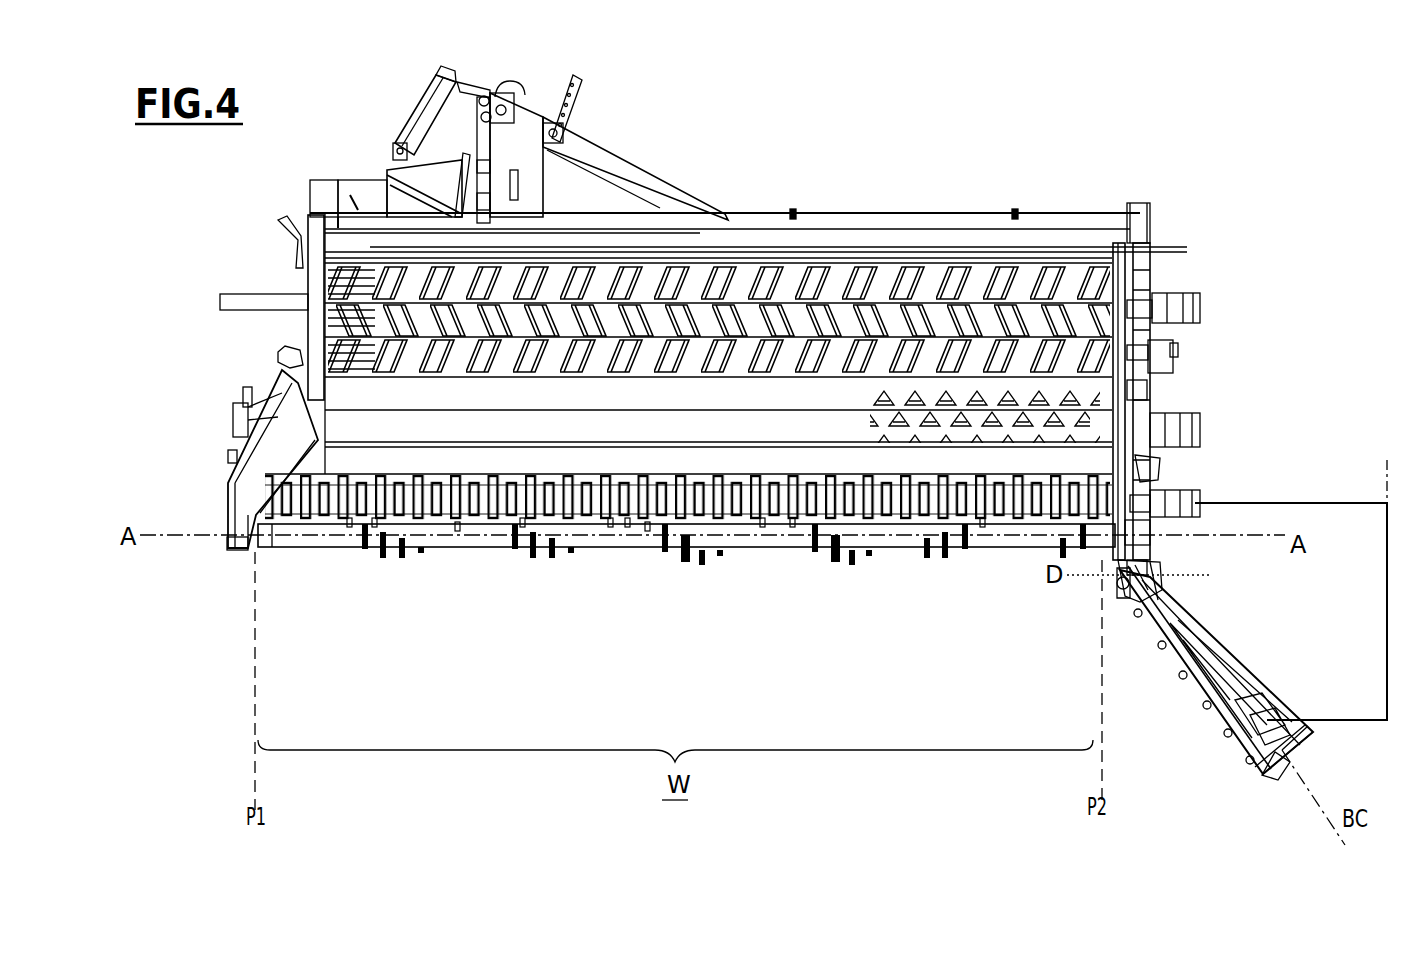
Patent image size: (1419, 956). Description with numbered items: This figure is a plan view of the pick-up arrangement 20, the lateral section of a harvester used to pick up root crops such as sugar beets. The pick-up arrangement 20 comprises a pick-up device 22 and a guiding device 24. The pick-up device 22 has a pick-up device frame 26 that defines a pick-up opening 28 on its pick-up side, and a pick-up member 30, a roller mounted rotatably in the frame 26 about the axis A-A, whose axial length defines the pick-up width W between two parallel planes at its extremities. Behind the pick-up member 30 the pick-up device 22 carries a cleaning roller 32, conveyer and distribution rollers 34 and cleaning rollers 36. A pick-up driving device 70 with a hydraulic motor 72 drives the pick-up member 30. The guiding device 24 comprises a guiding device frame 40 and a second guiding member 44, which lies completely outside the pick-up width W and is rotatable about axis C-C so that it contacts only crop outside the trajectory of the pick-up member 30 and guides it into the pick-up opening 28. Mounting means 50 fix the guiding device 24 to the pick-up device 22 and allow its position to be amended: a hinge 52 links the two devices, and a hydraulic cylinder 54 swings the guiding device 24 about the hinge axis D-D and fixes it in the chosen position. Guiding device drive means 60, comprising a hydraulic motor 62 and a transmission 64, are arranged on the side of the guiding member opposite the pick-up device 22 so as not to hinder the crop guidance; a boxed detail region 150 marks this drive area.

The pick-up arrangement 20 is at (1020, 106).
The pick-up device 22 is at (752, 193).
The guiding device 24 is at (1172, 688).
The pick-up device frame 26 is at (253, 449).
The pick-up opening 28 is at (770, 573).
The pick-up member 30 is at (600, 546).
The cleaning roller 32 is at (1160, 471).
The conveyer and distribution rollers 34 is at (1083, 433).
The cleaning rollers 36 is at (1098, 352).
The guiding device frame 40 is at (1276, 688).
The second guiding member 44 is at (1237, 680).
The mounting means 50 is at (1165, 577).
The hinge 52 is at (1115, 580).
The hydraulic cylinder 54 is at (1187, 604).
The guiding device drive means 60 is at (1320, 733).
The motor 62 is at (1275, 715).
The transmission 64 is at (1262, 772).
The pick-up driving device 70 is at (1200, 344).
The motor 72 is at (1200, 515).
The detail region 150 is at (1387, 593).